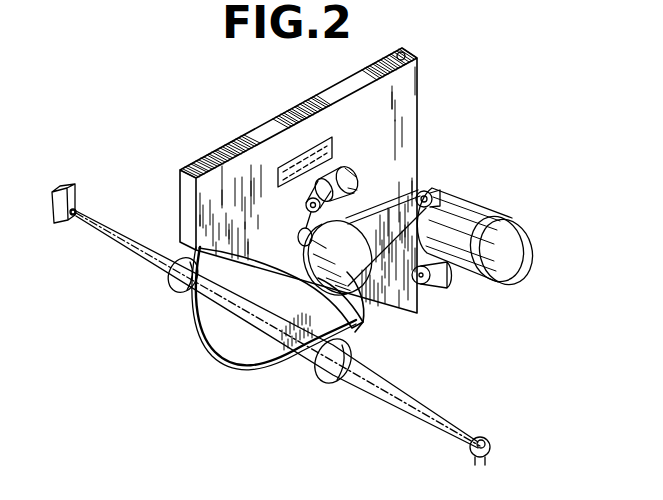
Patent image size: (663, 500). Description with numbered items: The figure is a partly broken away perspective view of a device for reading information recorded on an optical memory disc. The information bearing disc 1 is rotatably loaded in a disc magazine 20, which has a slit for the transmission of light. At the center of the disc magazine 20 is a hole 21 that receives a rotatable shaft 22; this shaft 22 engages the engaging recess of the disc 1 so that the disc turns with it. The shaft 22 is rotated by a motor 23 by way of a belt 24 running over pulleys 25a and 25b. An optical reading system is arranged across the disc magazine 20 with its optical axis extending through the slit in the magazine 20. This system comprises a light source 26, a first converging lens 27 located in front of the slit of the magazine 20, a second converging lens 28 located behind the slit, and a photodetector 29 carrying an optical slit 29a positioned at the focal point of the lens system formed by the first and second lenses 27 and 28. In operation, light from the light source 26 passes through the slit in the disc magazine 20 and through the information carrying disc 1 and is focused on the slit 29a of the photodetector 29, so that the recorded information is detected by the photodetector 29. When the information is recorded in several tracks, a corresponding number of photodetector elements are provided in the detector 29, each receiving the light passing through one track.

The information bearing disc 1 is at (224, 343).
The disc magazine 20 is at (402, 102).
The hole 21 is at (307, 228).
The rotatable shaft 22 is at (298, 273).
The motor 23 is at (522, 245).
The belt 24 is at (357, 207).
The pulley 25a is at (356, 320).
The pulley 25b is at (431, 203).
The light source 26 is at (516, 424).
The first converging lens 27 is at (323, 382).
The second converging lens 28 is at (176, 292).
The photodetector 29 is at (58, 208).
The optical slit 29a is at (77, 206).